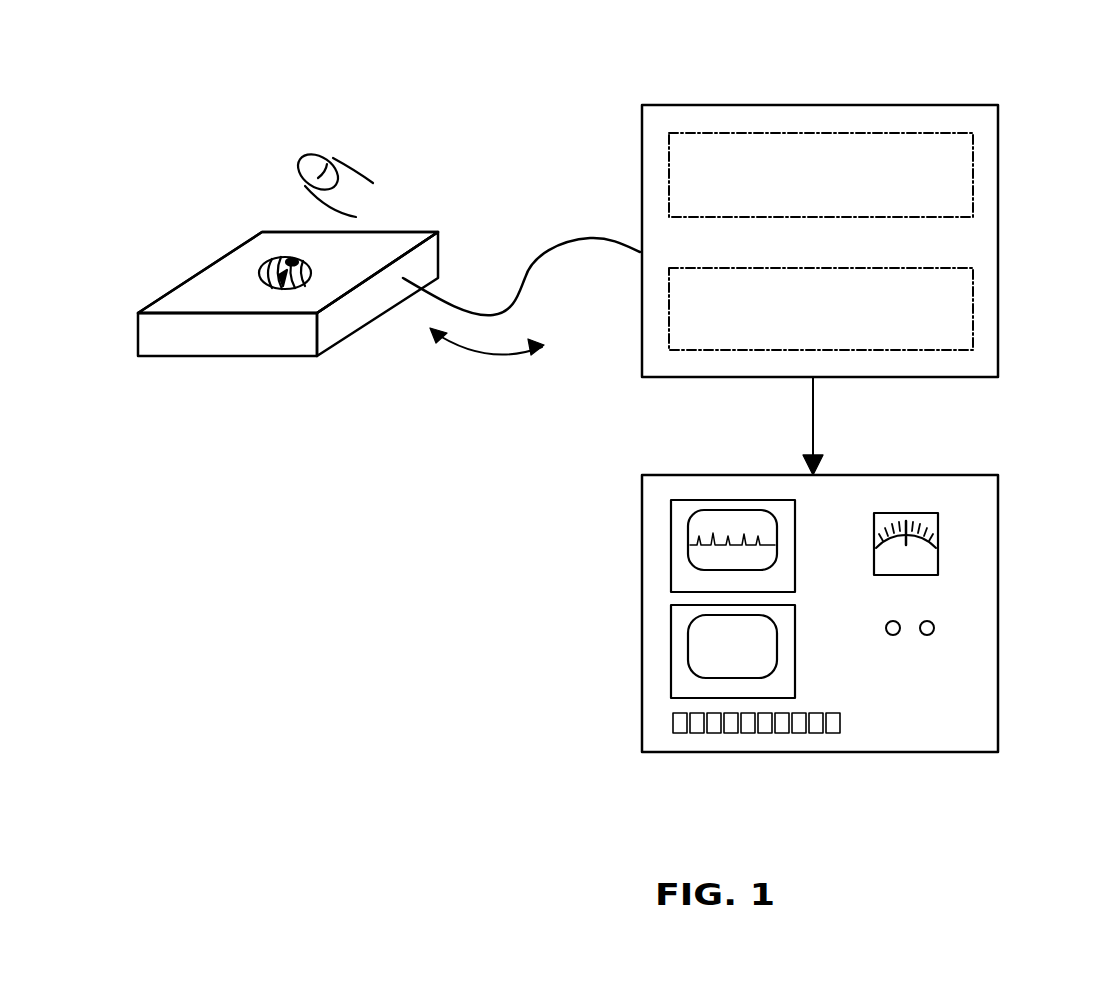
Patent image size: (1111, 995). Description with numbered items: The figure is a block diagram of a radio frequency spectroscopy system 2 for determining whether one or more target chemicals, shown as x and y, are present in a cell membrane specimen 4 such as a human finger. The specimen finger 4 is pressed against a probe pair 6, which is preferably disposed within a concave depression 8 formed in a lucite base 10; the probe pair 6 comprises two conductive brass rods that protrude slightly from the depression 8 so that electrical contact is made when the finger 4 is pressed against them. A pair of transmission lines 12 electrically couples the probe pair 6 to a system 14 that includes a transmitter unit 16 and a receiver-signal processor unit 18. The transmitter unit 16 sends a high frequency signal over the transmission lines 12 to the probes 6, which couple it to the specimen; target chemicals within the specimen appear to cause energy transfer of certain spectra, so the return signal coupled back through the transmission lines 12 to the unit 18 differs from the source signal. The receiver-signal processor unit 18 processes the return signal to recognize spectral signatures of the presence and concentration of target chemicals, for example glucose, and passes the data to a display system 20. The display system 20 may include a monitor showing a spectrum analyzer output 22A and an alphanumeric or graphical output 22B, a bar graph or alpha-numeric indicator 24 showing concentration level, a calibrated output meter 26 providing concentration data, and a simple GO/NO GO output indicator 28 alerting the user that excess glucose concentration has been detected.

The radio frequency spectroscopy system 2 is at (492, 70).
The cell membrane specimen 4 is at (355, 172).
The probe pair 6 is at (268, 285).
The concave depression 8 is at (247, 265).
The lucite base 10 is at (220, 338).
The transmission lines 12 is at (535, 258).
The system 14 is at (852, 273).
The transmitter unit 16 is at (932, 188).
The receiver-signal processor unit 18 is at (958, 308).
The display system 20 is at (819, 590).
The spectrum analyzer output 22A is at (671, 552).
The alphanumeric/graphical output 22B is at (671, 650).
The bar graph or alpha-numeric indicator 24 is at (655, 723).
The calibrated output meter 26 is at (938, 565).
The GO/NO GO output indicator 28 is at (940, 633).